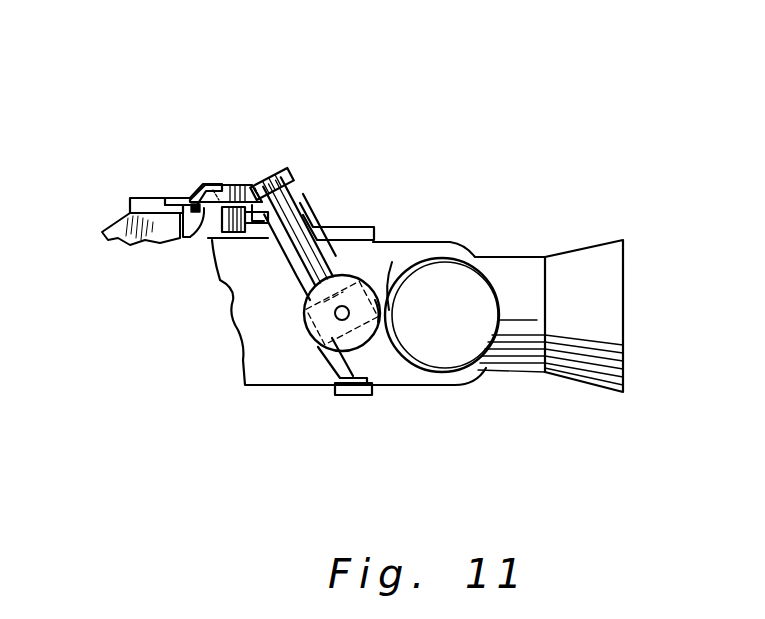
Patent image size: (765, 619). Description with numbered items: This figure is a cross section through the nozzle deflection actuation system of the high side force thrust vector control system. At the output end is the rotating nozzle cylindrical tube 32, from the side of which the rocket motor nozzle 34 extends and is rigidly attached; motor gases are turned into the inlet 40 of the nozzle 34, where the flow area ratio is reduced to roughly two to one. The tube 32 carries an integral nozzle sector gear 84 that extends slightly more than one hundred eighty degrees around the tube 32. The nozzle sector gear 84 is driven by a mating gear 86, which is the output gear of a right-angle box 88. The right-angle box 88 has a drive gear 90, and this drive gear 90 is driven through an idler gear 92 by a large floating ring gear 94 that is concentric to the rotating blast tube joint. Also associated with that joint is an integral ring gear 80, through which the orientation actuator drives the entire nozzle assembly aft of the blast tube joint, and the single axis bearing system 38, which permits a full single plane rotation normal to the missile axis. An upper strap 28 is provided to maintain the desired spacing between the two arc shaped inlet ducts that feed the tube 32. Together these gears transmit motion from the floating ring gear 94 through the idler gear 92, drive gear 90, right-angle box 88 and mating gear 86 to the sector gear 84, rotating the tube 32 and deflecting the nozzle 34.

The integral ring gear 80 is at (146, 197).
The large floating ring gear 94 is at (198, 197).
The idler gear 92 is at (232, 185).
The drive gear 90 is at (292, 175).
The upper strap 28 is at (357, 230).
The mating gear 86 is at (362, 277).
The nozzle sector gear 84 is at (400, 258).
The tube 32 is at (487, 280).
The rocket motor nozzle 34 is at (603, 245).
The single axis bearing system 38 is at (205, 242).
The right-angle box 88 is at (333, 322).
The inlet of nozzle 40 is at (452, 348).